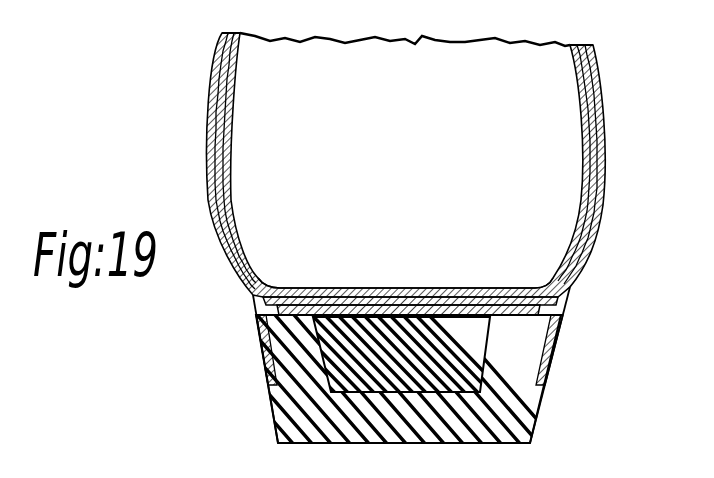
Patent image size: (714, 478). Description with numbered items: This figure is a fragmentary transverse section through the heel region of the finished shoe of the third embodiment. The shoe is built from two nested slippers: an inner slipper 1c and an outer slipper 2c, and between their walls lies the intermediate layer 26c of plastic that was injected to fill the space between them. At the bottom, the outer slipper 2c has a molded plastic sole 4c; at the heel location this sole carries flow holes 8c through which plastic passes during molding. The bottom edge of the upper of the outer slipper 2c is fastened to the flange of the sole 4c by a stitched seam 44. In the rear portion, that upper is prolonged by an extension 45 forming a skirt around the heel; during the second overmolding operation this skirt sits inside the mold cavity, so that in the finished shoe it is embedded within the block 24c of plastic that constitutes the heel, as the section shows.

The inner slipper 1c is at (230, 125).
The outer slipper 2c is at (212, 87).
The intermediate layer of plastic 26c is at (211, 162).
The sole 4c is at (472, 302).
The flow holes 8c is at (417, 312).
The block of plastic 24c is at (527, 427).
The stitched seam 44 is at (520, 324).
The extension (skirt) 45 is at (280, 367).